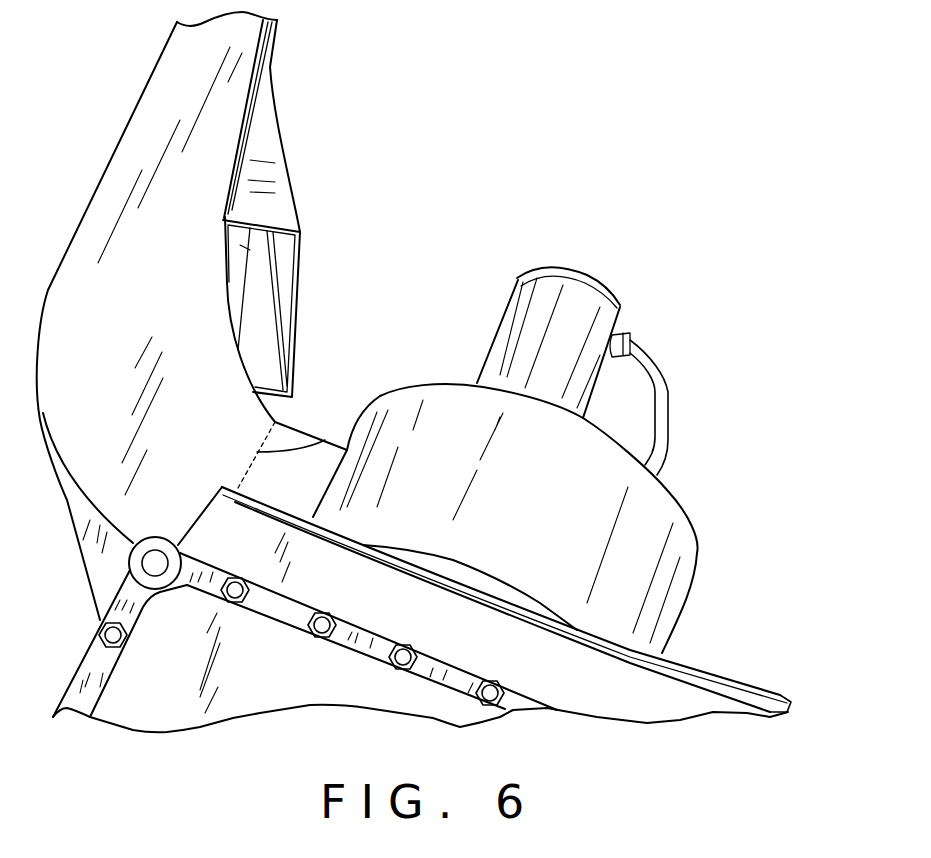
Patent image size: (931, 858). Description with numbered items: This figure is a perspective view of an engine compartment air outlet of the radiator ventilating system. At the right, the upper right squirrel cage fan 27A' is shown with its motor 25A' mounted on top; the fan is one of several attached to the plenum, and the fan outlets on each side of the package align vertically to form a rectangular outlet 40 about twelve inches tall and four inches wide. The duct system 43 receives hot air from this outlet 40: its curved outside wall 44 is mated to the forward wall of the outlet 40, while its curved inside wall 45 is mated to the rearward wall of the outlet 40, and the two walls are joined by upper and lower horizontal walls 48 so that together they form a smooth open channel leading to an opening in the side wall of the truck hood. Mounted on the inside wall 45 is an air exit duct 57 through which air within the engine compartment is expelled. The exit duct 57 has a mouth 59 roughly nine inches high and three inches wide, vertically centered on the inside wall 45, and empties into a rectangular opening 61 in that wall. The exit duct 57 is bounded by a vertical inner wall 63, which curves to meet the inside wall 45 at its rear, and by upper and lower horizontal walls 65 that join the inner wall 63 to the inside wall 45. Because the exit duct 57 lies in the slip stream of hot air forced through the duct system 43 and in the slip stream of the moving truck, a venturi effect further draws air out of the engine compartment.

The duct system 43 is at (104, 84).
The curved outside wall 44 is at (83, 533).
The curved inside wall 45 is at (263, 62).
The upper and lower horizontal walls 48 is at (85, 328).
The air exit duct 57 is at (305, 187).
The mouth 59 is at (290, 283).
The rectangular opening 61 is at (240, 245).
The vertical inner wall 63 is at (288, 240).
The upper and lower horizontal walls 65 is at (250, 153).
The rectangular outlet 40 is at (325, 440).
The motor 25A' is at (572, 336).
The squirrel cage fan 27A' is at (505, 475).